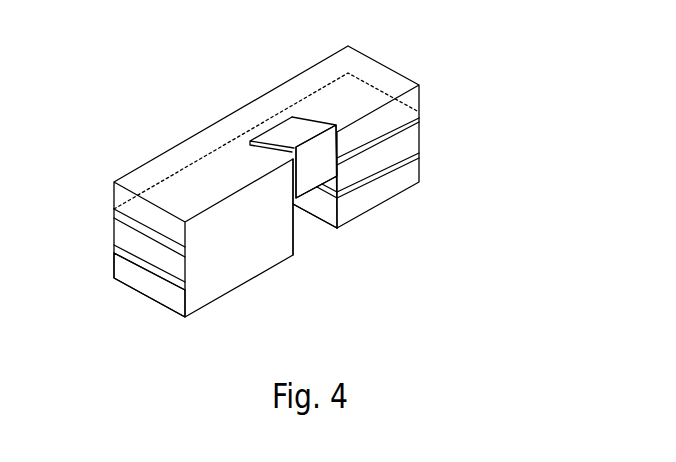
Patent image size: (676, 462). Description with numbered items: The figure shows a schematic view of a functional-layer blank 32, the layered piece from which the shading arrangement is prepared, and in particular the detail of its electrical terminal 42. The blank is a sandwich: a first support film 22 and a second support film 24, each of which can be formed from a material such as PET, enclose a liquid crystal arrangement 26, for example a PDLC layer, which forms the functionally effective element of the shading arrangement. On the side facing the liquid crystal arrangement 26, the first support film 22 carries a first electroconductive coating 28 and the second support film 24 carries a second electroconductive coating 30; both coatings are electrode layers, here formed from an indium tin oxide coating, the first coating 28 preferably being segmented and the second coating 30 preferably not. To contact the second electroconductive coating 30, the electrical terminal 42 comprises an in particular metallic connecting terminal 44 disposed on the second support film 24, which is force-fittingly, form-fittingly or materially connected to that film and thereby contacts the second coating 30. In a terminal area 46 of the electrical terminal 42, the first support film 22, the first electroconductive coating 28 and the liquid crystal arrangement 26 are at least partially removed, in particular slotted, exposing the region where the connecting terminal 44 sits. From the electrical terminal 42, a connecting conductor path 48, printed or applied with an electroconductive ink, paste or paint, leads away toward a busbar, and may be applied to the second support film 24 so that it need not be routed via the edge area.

The first support film 22 is at (403, 177).
The second support film 24 is at (411, 98).
The liquid crystal arrangement 26 is at (173, 265).
The first electroconductive coating 28 is at (415, 153).
The second electroconductive coating 30 is at (415, 122).
The functional-layer blank 32 is at (111, 135).
The electrical terminal 42 is at (290, 132).
The connecting terminal 44 is at (316, 161).
The terminal area 46 is at (338, 240).
The connecting conductor path 48 is at (225, 173).